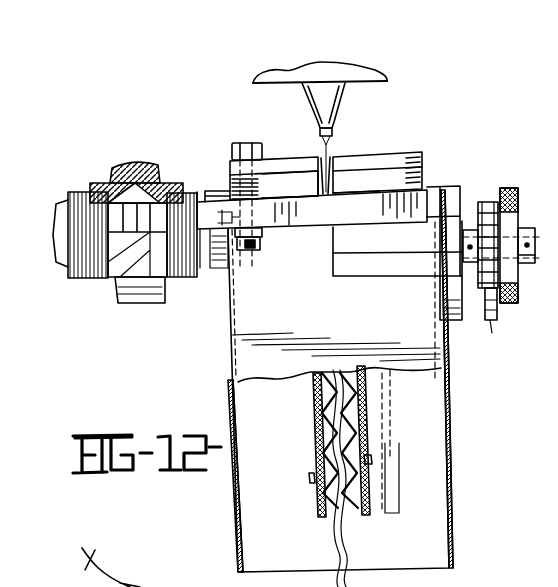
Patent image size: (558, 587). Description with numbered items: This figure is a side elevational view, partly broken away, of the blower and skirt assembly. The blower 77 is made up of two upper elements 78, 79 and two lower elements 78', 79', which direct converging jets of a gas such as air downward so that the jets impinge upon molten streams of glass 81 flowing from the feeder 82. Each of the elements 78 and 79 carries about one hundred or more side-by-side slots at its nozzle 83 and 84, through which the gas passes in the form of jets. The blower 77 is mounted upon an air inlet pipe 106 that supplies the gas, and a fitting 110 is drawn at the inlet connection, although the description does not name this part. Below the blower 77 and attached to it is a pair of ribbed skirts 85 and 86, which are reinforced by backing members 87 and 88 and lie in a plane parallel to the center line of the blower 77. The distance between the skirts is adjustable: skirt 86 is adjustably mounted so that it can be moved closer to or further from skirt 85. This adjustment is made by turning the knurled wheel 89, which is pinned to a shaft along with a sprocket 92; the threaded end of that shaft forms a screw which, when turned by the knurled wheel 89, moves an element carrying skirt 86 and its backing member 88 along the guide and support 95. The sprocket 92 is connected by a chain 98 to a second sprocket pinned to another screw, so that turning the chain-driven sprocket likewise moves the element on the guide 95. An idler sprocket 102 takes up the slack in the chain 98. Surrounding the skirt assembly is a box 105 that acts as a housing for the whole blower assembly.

The blower 77 is at (284, 152).
The upper blower element 78 is at (219, 206).
The lower blower element 78' is at (215, 181).
The upper blower element 79 is at (377, 158).
The lower blower element 79' is at (432, 153).
The molten streams of glass 81 is at (340, 142).
The feeder 82 is at (298, 92).
The nozzle 83 is at (290, 184).
The nozzle 84 is at (356, 182).
The skirt 85 is at (322, 522).
The skirt 86 is at (350, 522).
The backing member 87 is at (314, 443).
The backing member 88 is at (368, 427).
The knurled wheel 89 is at (518, 286).
The sprocket 92 is at (474, 300).
The guide and support 95 is at (418, 283).
The chain 98 is at (486, 204).
The idler sprocket 102 is at (493, 320).
The box 105 is at (232, 322).
The air inlet pipe 106 is at (53, 222).
The hex cap nut 110 is at (132, 166).